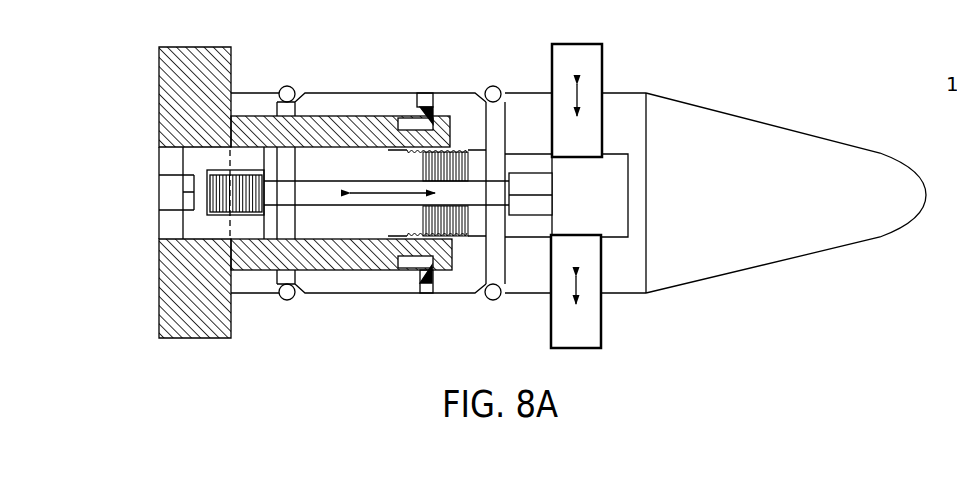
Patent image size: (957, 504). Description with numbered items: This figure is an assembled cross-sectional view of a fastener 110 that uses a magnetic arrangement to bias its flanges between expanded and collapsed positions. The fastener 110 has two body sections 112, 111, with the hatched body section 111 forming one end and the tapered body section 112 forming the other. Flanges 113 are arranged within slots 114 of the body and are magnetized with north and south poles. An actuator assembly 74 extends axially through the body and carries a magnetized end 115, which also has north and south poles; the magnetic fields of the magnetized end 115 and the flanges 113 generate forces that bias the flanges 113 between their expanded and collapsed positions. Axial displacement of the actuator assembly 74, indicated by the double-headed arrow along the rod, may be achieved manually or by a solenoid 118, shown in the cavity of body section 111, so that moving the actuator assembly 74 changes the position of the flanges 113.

The fastener 110 is at (362, 76).
The body section 111 is at (190, 46).
The body section 112 is at (755, 128).
The flanges 113 is at (603, 68).
The slots 114 is at (603, 123).
The magnetized end 115 is at (523, 172).
The solenoid 118 is at (197, 223).
The actuator assembly 74 is at (334, 209).